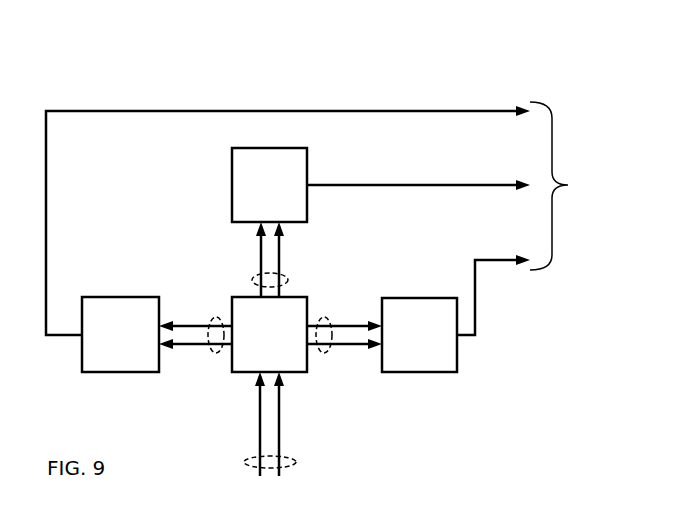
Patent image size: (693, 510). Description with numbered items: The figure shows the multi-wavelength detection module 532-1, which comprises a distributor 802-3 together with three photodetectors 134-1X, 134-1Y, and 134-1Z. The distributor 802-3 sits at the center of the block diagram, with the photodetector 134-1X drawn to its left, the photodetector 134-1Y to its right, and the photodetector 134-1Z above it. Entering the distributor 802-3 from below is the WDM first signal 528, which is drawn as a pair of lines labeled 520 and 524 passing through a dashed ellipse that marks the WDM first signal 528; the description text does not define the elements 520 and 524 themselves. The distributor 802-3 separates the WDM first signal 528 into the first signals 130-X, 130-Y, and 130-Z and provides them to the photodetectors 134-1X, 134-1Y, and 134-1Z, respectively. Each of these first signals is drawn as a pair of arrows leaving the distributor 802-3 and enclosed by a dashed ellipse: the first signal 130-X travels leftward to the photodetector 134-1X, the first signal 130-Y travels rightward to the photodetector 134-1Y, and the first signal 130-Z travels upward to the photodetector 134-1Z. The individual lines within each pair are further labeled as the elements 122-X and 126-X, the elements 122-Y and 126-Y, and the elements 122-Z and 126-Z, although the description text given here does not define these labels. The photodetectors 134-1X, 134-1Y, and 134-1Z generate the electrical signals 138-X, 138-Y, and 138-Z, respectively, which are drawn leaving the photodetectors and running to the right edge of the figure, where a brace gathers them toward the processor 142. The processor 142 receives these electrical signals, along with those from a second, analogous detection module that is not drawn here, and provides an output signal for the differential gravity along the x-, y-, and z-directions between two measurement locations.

The multi-wavelength detection module 532-1 is at (160, 48).
The photodetector 134-1X is at (151, 347).
The photodetector 134-1Y is at (451, 347).
The photodetector 134-1Z is at (301, 197).
The distributor 802-3 is at (295, 347).
The electrical signal 138-X is at (438, 87).
The electrical signal 138-Y is at (492, 262).
The electrical signal 138-Z is at (417, 185).
The processor 142 is at (597, 186).
The X first signal line 122-X is at (195, 344).
The X second signal line 126-X is at (192, 325).
The first signal 130-X is at (212, 352).
The Y first signal line 122-Y is at (344, 344).
The Y second signal line 126-Y is at (350, 326).
The first signal 130-Y is at (326, 352).
The Z first signal line 122-Z is at (261, 250).
The Z second signal line 126-Z is at (279, 250).
The first signal 130-Z is at (316, 284).
The first input line 520 is at (258, 430).
The second input line 524 is at (282, 430).
The WDM first signal 528 is at (297, 461).